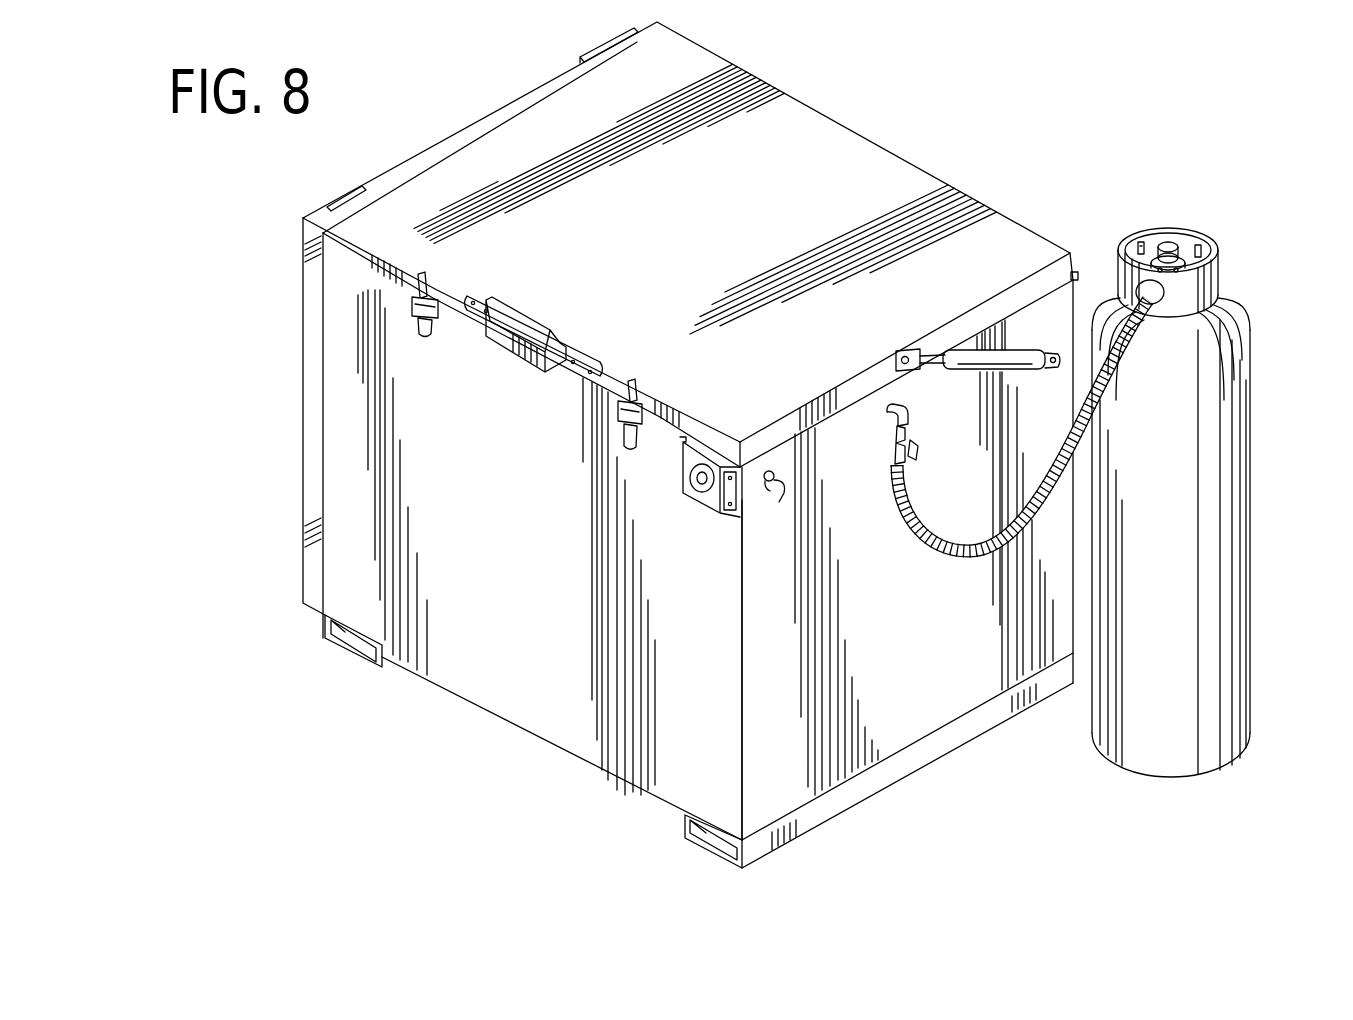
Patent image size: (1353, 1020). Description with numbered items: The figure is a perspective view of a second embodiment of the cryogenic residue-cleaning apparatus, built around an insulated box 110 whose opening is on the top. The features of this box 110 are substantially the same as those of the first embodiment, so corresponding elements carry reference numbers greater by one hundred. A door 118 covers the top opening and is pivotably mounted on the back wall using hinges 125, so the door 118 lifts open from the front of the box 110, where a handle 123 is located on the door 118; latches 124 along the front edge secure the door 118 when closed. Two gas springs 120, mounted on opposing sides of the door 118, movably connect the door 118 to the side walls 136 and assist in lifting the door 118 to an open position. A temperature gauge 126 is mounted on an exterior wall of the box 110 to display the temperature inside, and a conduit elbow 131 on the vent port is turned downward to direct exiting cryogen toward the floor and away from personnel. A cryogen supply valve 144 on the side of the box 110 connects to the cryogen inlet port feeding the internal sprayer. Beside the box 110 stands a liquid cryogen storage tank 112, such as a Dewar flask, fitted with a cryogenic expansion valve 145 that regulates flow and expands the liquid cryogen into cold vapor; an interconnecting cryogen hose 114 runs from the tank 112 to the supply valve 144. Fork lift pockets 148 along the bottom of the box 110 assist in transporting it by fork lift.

The insulated box 110 is at (347, 463).
The liquid cryogen storage tank 112 is at (1252, 346).
The interconnecting cryogen hose 114 is at (925, 537).
The door 118 is at (806, 122).
The gas spring 120 is at (972, 348).
The handle 123 is at (508, 321).
The latch 124 is at (428, 276).
The hinge 125 is at (1075, 272).
The temperature gauge 126 is at (706, 451).
The conduit elbow 131 is at (778, 505).
The side wall 136 is at (767, 597).
The cryogen supply valve 144 is at (910, 422).
The cryogenic expansion valve 145 is at (1168, 244).
The fork lift pocket 148 is at (597, 48).